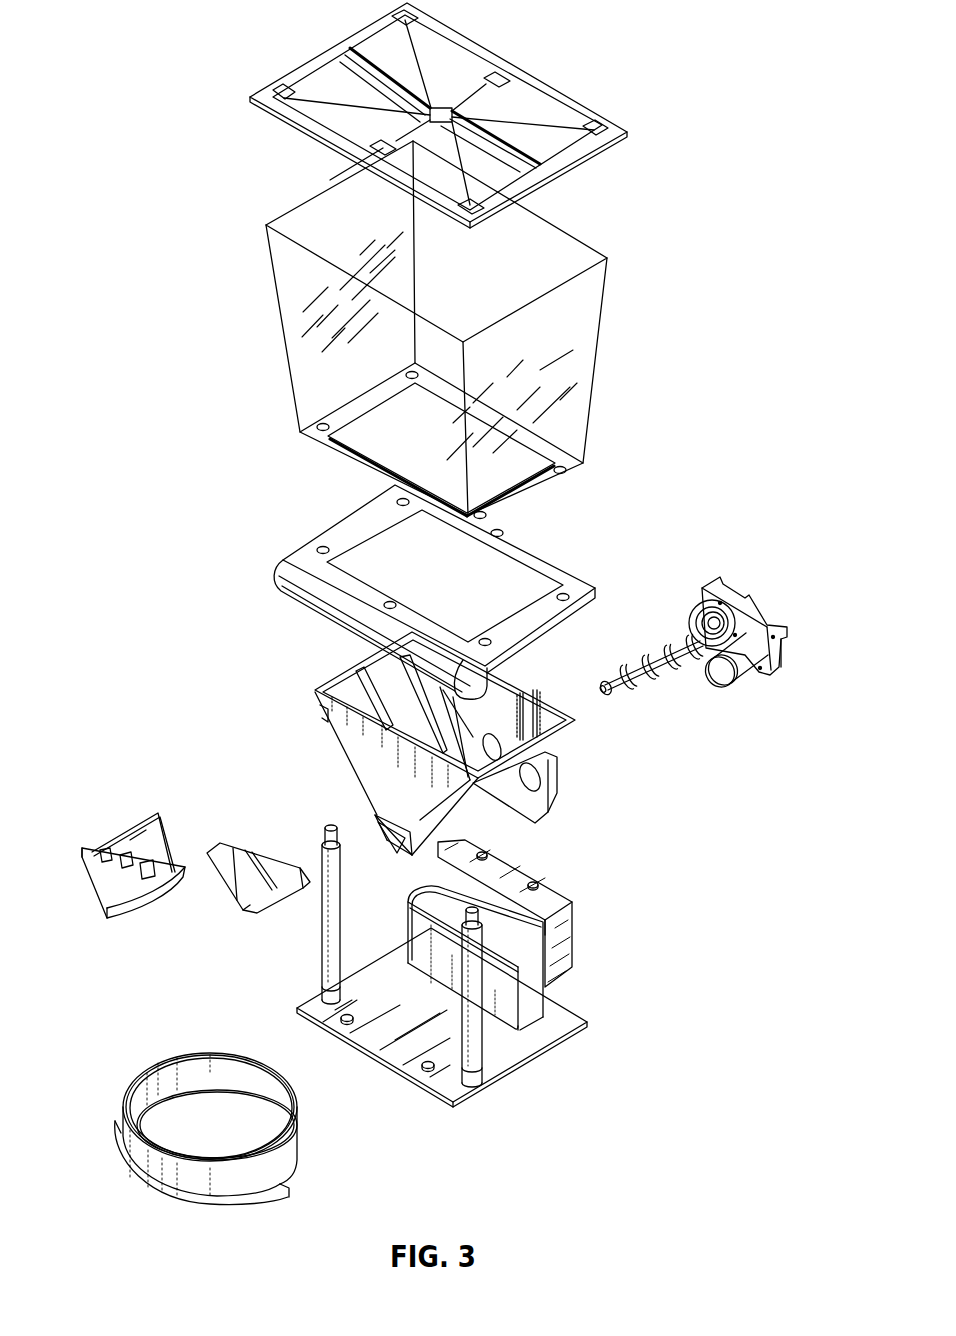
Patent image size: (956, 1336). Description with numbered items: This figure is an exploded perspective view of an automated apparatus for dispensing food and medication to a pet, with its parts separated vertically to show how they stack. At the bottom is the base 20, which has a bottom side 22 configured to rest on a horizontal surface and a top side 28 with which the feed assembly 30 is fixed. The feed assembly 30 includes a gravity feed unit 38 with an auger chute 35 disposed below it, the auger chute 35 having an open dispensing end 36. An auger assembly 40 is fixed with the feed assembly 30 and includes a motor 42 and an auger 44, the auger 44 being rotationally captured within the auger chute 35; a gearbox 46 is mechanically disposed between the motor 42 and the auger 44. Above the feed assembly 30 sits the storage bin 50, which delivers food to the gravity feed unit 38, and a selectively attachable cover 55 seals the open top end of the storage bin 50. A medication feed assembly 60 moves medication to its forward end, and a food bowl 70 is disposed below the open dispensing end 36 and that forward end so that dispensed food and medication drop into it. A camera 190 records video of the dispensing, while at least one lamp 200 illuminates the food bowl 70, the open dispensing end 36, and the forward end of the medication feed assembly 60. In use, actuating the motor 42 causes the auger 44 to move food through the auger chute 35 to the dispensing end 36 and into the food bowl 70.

The cover 55 is at (612, 128).
The storage bin 50 is at (283, 325).
The camera 190 is at (372, 592).
The lamp 200 is at (308, 590).
The feed assembly 30 is at (397, 743).
The gravity feed unit 38 is at (347, 735).
The auger chute 35 is at (331, 818).
The open dispensing end 36 is at (382, 833).
The auger assembly 40 is at (705, 601).
The auger 44 is at (667, 637).
The gearbox 46 is at (750, 607).
The motor 42 is at (745, 670).
The bottom side 22 is at (463, 987).
The base 20 is at (537, 1053).
The top side 28 is at (547, 1017).
The medication feed assembly 60 is at (310, 927).
The food bowl 70 is at (133, 1153).